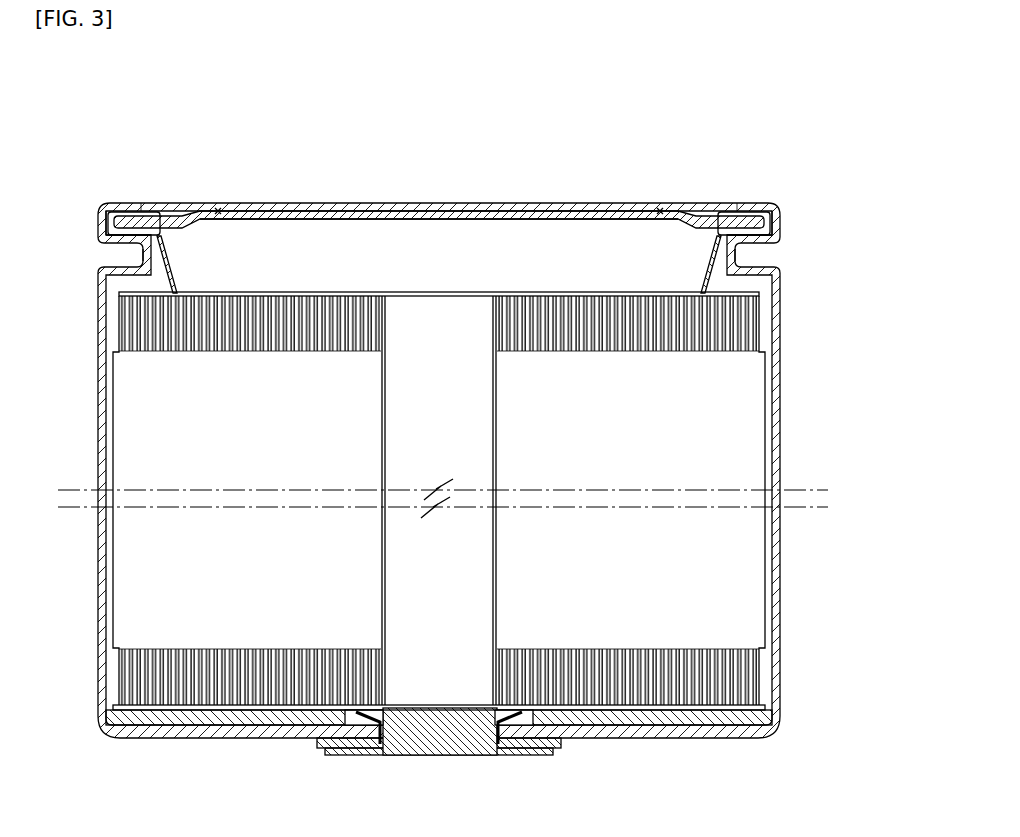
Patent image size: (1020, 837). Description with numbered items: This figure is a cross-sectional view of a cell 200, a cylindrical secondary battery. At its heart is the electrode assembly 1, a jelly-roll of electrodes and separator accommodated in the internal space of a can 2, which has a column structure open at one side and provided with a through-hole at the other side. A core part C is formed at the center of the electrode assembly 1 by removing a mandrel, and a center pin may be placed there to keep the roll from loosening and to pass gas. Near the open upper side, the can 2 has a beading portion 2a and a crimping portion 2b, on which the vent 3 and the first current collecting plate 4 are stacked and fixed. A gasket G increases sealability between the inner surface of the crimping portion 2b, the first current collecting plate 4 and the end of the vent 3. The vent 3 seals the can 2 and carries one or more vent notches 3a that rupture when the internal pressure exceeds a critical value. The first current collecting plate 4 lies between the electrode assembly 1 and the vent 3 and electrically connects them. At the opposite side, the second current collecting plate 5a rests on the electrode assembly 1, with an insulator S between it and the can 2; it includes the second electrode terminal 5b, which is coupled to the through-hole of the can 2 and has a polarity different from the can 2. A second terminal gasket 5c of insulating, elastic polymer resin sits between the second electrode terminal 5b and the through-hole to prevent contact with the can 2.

The cell 200 is at (109, 111).
The electrode assembly 1 is at (733, 436).
The can 2 is at (781, 356).
The beading portion 2a is at (779, 254).
The crimping portion 2b is at (778, 205).
The vent 3 is at (405, 205).
The vent notch 3a is at (218, 208).
The first current collecting plate 4 is at (522, 296).
The second current collecting plate 5a is at (212, 710).
The second electrode terminal 5b is at (459, 756).
The second terminal gasket 5c is at (382, 744).
The gasket G is at (149, 218).
The insulator S is at (680, 716).
The core part C is at (439, 500).